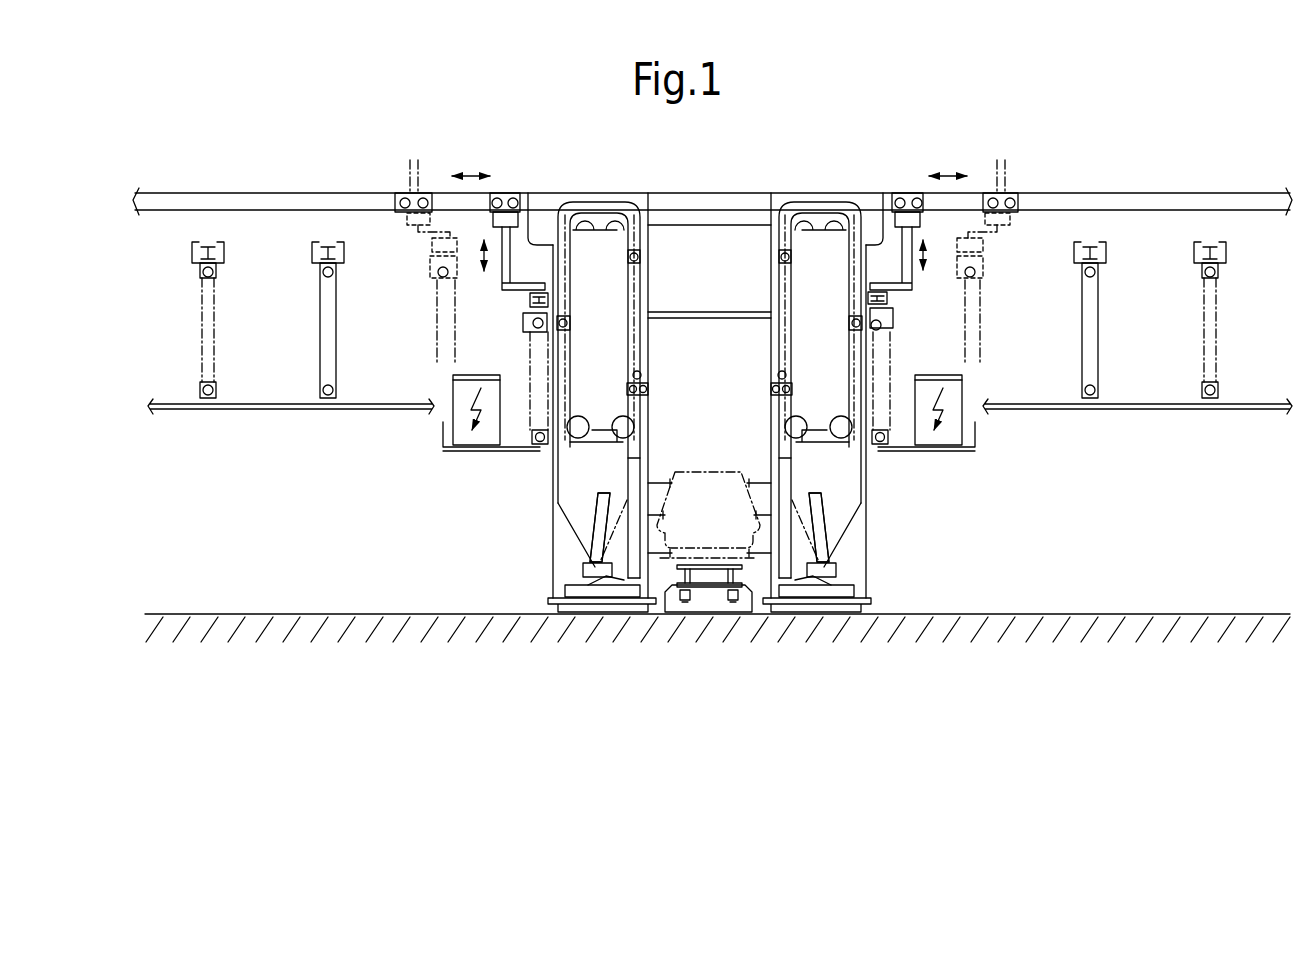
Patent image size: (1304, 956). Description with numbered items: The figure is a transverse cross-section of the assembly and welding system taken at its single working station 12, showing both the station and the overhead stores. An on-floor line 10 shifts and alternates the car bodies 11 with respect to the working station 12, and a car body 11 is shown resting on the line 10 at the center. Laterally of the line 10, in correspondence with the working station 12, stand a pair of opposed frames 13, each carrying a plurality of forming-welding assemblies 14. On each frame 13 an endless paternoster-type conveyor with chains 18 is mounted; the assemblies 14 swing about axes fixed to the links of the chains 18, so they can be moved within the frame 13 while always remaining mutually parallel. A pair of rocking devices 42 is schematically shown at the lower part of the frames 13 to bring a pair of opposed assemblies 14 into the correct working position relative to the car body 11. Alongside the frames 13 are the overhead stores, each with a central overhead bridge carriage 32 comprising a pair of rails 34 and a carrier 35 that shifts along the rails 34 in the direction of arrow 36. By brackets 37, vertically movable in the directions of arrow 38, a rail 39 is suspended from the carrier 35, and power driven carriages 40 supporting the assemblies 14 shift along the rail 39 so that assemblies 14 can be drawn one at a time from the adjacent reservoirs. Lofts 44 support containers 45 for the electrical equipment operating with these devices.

The on-floor line 10 is at (720, 606).
The car body 11 is at (725, 470).
The working station 12 is at (722, 258).
The frame 13 is at (553, 499).
The forming-welding assembly 14 is at (342, 345).
The chain 18 is at (638, 228).
The central overhead bridge carriage 32 is at (274, 262).
The rail 34 is at (248, 192).
The carrier 35 is at (420, 192).
The arrow 36 is at (478, 172).
The bracket 37 is at (503, 273).
The arrow 38 is at (482, 263).
The rail 39 is at (337, 248).
The power driven carriage 40 is at (524, 325).
The rocking device 42 is at (603, 510).
The loft 44 is at (452, 455).
The container for electrical equipment 45 is at (455, 391).